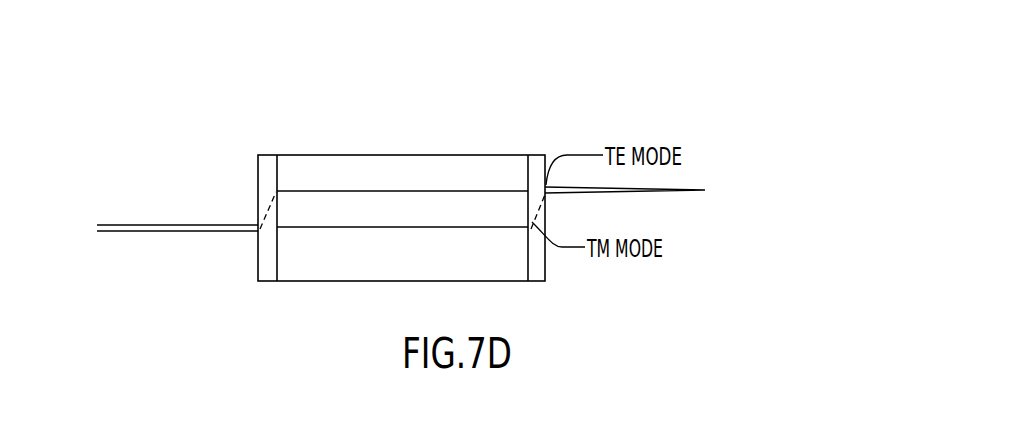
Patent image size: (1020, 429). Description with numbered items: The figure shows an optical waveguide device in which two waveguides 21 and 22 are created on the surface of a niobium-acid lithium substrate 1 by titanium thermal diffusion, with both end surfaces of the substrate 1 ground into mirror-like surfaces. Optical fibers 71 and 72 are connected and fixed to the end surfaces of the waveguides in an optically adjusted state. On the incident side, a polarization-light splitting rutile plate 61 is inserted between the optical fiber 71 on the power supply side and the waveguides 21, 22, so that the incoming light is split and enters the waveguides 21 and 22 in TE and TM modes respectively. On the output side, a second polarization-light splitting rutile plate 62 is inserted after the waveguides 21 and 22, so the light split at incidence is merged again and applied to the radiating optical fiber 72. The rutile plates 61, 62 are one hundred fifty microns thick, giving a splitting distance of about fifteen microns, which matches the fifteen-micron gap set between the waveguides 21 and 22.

The niobium-acid lithium substrate 1 is at (292, 155).
The waveguide 21 is at (385, 191).
The waveguide 22 is at (345, 227).
The polarization-light splitting rutile plate 61 is at (533, 155).
The polarization-light splitting rutile plate 62 is at (258, 158).
The optical fiber 71 is at (684, 188).
The optical fiber 72 is at (157, 223).